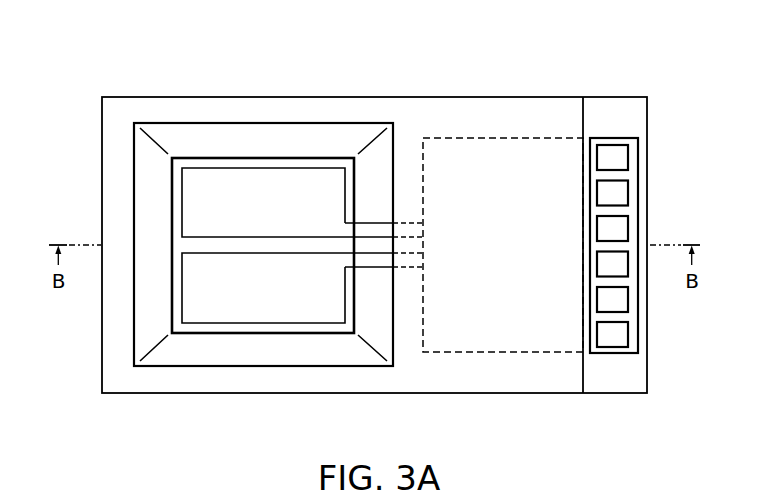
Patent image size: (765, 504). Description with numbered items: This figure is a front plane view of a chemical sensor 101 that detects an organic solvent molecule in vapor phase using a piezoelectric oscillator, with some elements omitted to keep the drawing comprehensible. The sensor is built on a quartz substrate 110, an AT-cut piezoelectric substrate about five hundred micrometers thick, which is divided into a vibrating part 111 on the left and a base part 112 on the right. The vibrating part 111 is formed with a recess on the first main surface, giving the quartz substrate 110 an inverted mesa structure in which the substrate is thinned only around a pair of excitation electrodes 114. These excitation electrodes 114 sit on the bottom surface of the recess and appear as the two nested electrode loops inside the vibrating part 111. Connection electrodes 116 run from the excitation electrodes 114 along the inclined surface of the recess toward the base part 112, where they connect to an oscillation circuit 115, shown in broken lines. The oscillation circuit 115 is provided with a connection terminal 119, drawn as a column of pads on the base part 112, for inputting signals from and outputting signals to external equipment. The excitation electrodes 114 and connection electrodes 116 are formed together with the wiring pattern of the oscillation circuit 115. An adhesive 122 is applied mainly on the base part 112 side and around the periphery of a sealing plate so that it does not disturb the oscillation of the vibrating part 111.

The chemical sensor 101 is at (414, 62).
The quartz substrate 110 is at (622, 94).
The vibrating part 111 is at (208, 97).
The base part 112 is at (565, 100).
The excitation electrodes 114 is at (272, 183).
The oscillation circuit 115 is at (512, 163).
The connection electrodes 116 is at (374, 230).
The connection terminal 119 is at (612, 195).
The adhesive 122 is at (463, 112).